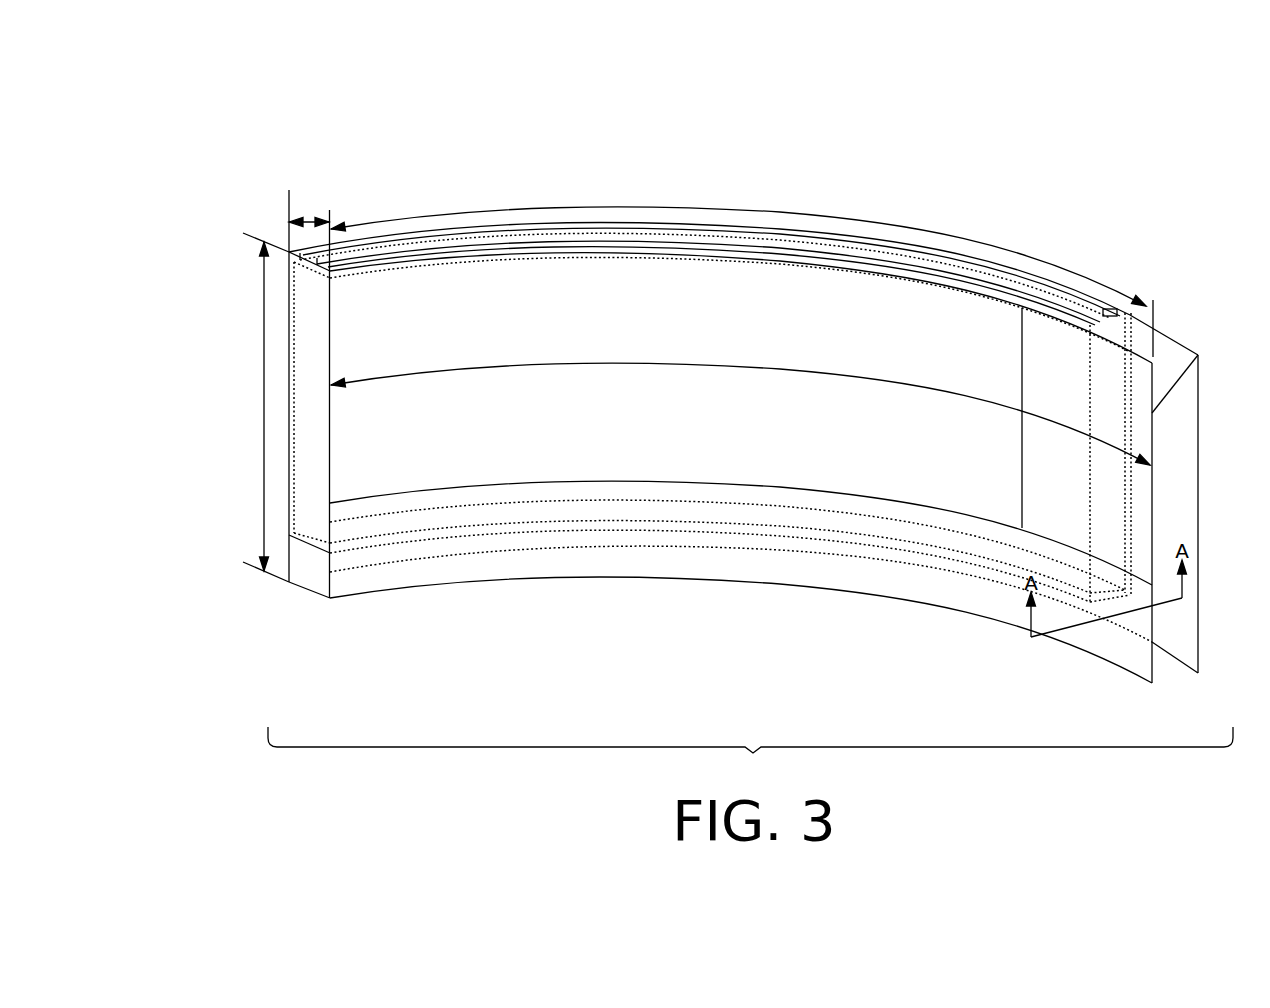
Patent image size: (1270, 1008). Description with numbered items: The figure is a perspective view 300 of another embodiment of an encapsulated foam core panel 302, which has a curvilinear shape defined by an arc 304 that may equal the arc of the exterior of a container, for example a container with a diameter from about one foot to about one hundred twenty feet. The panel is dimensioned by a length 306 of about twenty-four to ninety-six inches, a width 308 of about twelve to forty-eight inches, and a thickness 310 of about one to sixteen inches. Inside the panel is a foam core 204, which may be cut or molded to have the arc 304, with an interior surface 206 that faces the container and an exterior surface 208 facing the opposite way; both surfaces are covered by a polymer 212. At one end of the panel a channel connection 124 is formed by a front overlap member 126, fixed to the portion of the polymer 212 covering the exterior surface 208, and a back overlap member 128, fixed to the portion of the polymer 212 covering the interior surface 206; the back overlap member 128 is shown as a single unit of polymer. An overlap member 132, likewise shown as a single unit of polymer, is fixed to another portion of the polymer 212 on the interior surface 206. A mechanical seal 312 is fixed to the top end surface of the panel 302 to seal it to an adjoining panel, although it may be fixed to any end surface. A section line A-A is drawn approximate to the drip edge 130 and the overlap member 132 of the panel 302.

The perspective view 300 is at (750, 756).
The encapsulated foam core panel 302 is at (250, 121).
The arc 304 is at (680, 364).
The length 306 is at (680, 208).
The width 308 is at (262, 390).
The thickness 310 is at (308, 222).
The mechanical seal 312 is at (1057, 288).
The polymer 212 is at (330, 438).
The drip edge 130 is at (312, 590).
The overlap member 132 is at (345, 598).
The channel connection 124 is at (1192, 328).
The front overlap member 126 is at (1198, 398).
The back overlap member 128 is at (1198, 357).
The foam core 204 is at (1080, 383).
The interior surface 206 is at (1050, 386).
The exterior surface 208 is at (1130, 426).